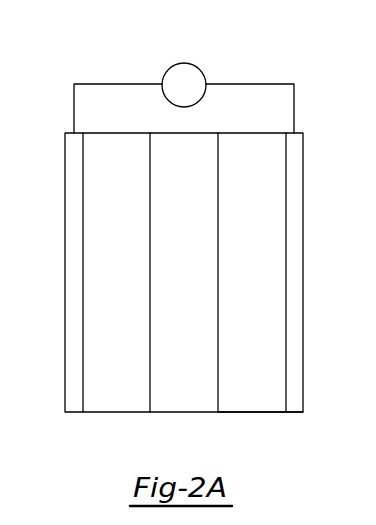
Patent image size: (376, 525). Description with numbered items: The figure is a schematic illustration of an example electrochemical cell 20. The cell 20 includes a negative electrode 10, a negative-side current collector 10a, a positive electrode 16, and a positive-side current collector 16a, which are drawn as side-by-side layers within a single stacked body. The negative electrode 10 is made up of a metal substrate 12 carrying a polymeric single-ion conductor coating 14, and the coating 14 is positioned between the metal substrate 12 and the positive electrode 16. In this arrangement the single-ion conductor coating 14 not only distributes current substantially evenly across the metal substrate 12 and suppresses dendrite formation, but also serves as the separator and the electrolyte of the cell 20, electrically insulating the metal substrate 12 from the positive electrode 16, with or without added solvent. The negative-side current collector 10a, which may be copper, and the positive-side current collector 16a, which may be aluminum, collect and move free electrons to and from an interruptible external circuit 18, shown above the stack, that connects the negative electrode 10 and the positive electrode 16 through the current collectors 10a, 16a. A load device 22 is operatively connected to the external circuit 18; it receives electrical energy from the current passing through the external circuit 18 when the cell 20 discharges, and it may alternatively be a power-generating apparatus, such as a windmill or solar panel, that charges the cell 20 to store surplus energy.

The electrochemical cell 20 is at (305, 62).
The external circuit 18 is at (118, 84).
The load device 22 is at (183, 63).
The negative electrode 10 is at (219, 417).
The negative-side current collector 10a is at (76, 240).
The metal substrate 12 is at (124, 329).
The polymeric single-ion conductor coating 14 is at (192, 329).
The positive electrode 16 is at (258, 400).
The positive-side current collector 16a is at (293, 240).